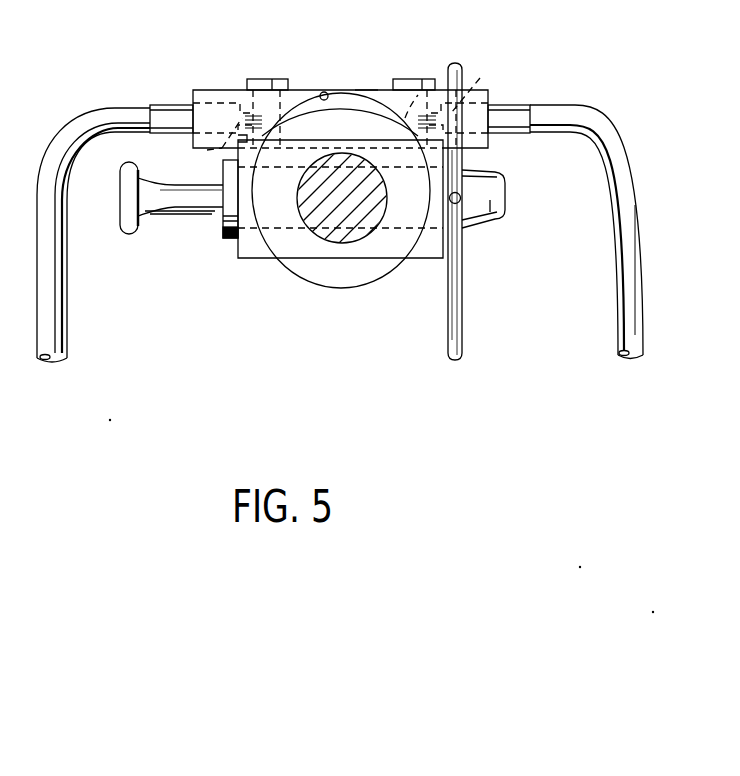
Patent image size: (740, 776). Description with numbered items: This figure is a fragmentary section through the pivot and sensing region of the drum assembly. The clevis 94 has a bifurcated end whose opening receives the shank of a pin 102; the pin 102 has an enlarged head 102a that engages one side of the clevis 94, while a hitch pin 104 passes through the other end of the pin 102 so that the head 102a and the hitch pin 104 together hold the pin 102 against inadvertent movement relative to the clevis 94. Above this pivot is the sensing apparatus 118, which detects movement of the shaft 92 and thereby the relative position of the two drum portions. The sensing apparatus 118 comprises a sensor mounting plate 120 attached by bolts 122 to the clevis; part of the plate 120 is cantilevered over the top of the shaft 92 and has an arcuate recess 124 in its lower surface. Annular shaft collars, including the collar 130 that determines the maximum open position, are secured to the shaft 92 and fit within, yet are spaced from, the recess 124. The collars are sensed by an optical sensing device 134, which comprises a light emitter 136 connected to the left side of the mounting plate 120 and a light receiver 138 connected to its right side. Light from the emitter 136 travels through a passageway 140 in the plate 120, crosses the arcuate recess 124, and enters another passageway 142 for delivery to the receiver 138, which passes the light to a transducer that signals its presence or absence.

The shaft 92 is at (358, 223).
The clevis 94 is at (252, 262).
The pin 102 is at (122, 208).
The enlarged head 102a is at (228, 218).
The hitch pin 104 is at (466, 323).
The sensing apparatus 118 is at (190, 93).
The sensor mounting plate 120 is at (367, 89).
The bolts 122 is at (248, 79).
The arcuate recess 124 is at (323, 92).
The annular shaft collar 130 is at (326, 278).
The optical sensing device 134 is at (538, 106).
The light emitter 136 is at (102, 123).
The light receiver 138 is at (605, 132).
The passageway 140 is at (208, 150).
The passageway 142 is at (482, 76).